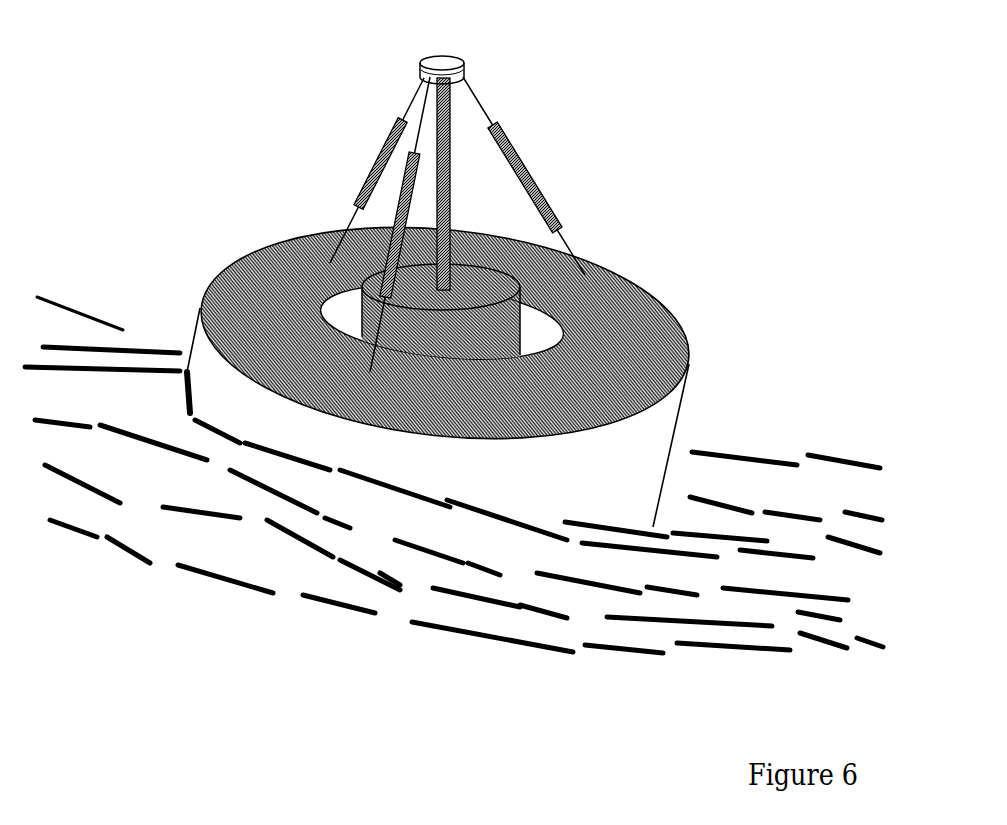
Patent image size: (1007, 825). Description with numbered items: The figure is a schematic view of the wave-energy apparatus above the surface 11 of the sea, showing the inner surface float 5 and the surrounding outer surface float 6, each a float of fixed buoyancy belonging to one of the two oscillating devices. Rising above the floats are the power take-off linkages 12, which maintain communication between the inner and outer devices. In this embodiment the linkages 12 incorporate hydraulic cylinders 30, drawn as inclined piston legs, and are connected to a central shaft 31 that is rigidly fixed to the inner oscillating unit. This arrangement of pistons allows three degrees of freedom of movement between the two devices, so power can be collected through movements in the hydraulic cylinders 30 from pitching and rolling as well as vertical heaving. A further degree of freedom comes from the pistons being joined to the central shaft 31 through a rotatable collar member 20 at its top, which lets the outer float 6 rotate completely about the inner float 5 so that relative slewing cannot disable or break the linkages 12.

The inner surface float 5 is at (577, 274).
The outer surface float 6 is at (692, 353).
The surface of the liquid 11 is at (805, 457).
The power take-off linkages 12 is at (492, 196).
The rotatable collar member 20 is at (433, 61).
The hydraulic cylinders 30 is at (508, 135).
The central shaft 31 is at (453, 108).